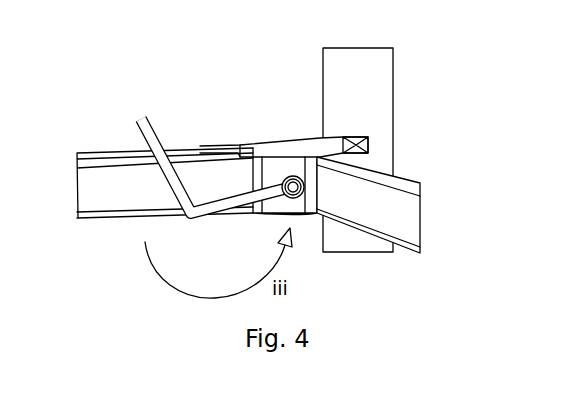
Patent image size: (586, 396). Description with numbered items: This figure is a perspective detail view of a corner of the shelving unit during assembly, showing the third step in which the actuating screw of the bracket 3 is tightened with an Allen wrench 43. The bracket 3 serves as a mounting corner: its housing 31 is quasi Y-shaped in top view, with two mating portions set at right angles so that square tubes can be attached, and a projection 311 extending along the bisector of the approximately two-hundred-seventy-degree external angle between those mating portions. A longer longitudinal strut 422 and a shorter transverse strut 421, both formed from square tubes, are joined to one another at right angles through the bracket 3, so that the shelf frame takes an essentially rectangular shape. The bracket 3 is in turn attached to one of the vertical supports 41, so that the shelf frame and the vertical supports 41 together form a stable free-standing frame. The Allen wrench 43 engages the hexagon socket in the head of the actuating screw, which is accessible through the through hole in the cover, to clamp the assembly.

The bracket 3 is at (327, 107).
The housing 31 is at (273, 125).
The projection 311 is at (338, 145).
The vertical support 41 is at (410, 92).
The transverse strut 421 is at (410, 180).
The longitudinal strut 422 is at (95, 175).
The Allen wrench 43 is at (143, 125).